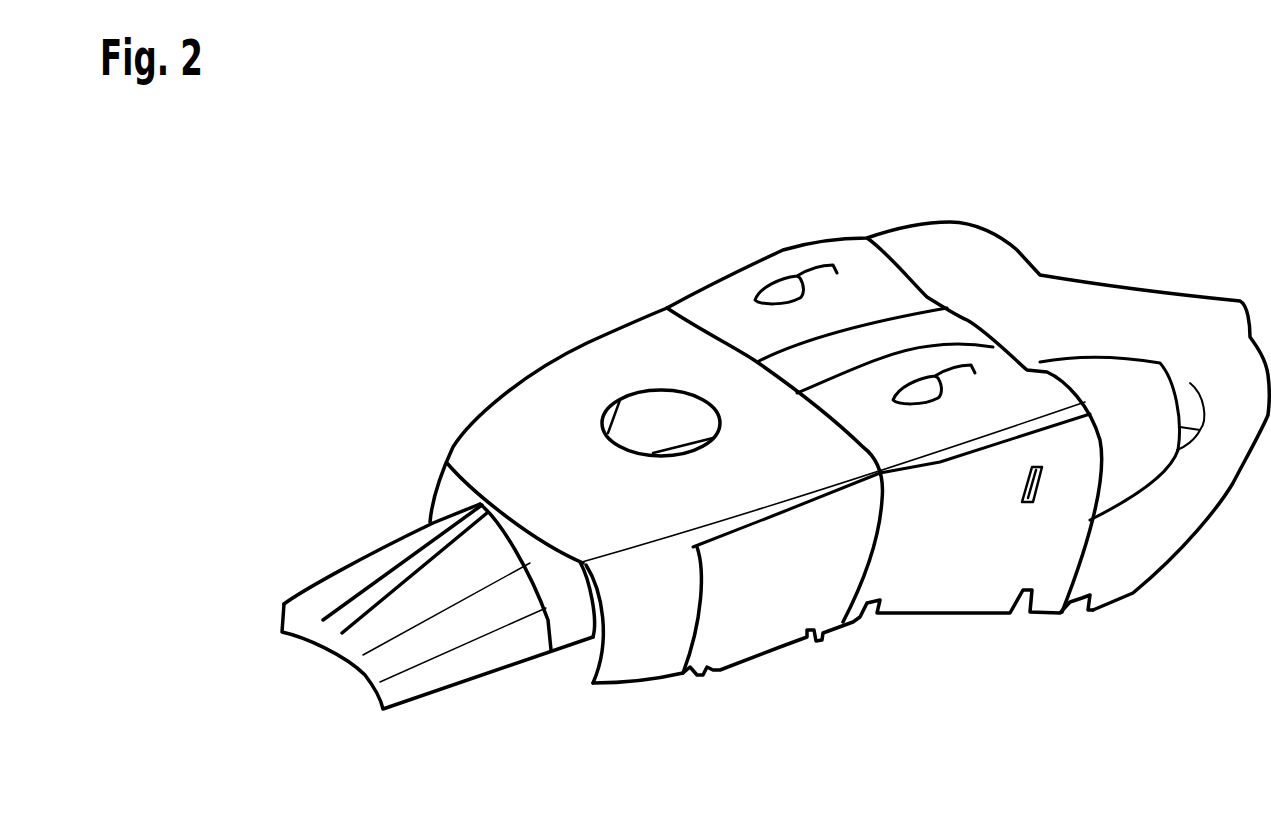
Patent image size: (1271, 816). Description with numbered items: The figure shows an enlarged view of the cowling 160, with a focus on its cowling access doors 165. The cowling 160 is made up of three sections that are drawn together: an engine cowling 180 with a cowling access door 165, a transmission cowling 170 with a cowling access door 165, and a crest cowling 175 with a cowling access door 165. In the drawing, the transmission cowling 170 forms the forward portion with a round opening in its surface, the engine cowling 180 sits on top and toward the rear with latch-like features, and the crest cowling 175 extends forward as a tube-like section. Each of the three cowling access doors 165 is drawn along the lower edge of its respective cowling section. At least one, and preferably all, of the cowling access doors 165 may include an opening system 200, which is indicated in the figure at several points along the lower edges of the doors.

The cowling 160 is at (1098, 218).
The cowling access door 165 is at (423, 677).
The transmission cowling 170 is at (528, 365).
The crest cowling 175 is at (342, 555).
The engine cowling 180 is at (782, 248).
The opening system 200 is at (495, 678).